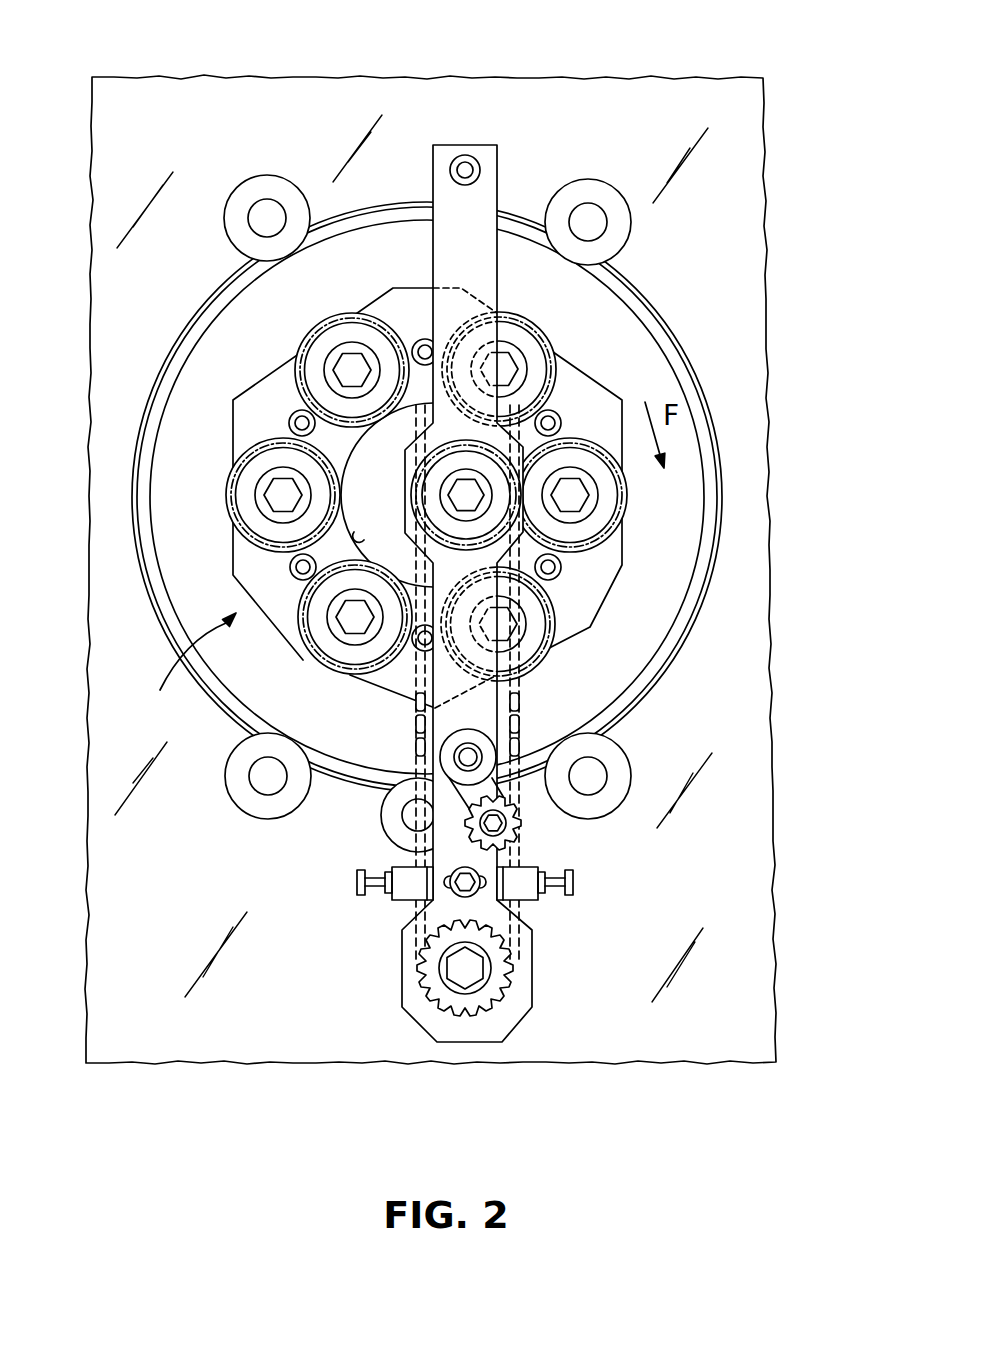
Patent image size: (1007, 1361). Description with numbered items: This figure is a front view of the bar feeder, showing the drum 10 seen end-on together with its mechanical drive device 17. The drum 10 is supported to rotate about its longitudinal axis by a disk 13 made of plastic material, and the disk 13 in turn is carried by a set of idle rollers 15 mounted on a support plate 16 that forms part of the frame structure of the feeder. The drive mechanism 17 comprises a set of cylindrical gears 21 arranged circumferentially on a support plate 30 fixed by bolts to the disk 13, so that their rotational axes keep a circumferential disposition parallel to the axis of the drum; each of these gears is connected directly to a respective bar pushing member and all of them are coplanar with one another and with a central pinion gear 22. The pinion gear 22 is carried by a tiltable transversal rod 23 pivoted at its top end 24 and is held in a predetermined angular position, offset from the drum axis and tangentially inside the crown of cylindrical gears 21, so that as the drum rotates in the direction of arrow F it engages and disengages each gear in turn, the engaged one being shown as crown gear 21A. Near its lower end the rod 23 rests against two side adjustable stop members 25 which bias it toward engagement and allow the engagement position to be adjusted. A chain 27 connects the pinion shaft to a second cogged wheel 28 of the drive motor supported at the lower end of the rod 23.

The drum 10 is at (372, 566).
The disk 13 is at (670, 543).
The idle rollers 15 is at (250, 190).
The support plate 16 is at (738, 137).
The mechanical drive device 17 is at (180, 668).
The cylindrical gears 21 is at (312, 356).
The crown gear 21A is at (608, 502).
The central pinion gear 22 is at (500, 435).
The transversal rod 23 is at (480, 200).
The top end 24 is at (466, 158).
The adjustable stop members 25 is at (402, 900).
The chain 27 is at (415, 724).
The second cogged wheel 28 is at (447, 1007).
The support plate 30 is at (263, 393).